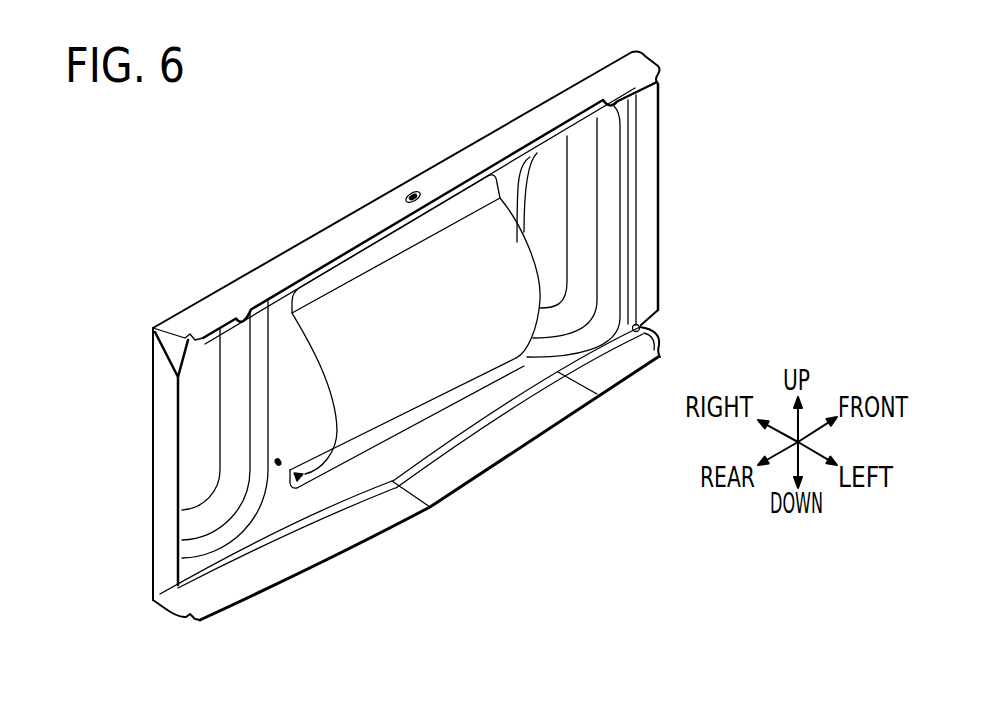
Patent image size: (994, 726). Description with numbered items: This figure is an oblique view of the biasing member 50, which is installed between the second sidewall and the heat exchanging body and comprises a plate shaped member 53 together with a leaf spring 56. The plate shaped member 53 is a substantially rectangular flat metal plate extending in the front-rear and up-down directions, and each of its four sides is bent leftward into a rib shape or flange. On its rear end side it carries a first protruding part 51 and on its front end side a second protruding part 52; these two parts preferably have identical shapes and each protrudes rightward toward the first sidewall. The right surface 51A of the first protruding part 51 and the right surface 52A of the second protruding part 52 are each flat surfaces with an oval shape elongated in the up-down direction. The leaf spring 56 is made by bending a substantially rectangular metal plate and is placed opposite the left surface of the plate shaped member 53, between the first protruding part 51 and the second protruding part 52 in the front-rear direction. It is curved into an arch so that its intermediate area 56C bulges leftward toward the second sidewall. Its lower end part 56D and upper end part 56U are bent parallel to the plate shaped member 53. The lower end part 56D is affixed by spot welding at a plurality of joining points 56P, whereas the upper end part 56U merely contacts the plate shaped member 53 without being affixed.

The biasing member 50 is at (349, 178).
The first protruding part 51 is at (232, 352).
The right surface of the first protruding part 51A is at (195, 382).
The second protruding part 52 is at (582, 192).
The right surface of the second protruding part 52A is at (538, 212).
The plate shaped member 53 is at (301, 232).
The leaf spring 56 is at (451, 362).
The upper end part 56U is at (440, 220).
The intermediate area 56C is at (445, 340).
The lower end part 56D is at (312, 478).
The joining points 56P is at (303, 478).